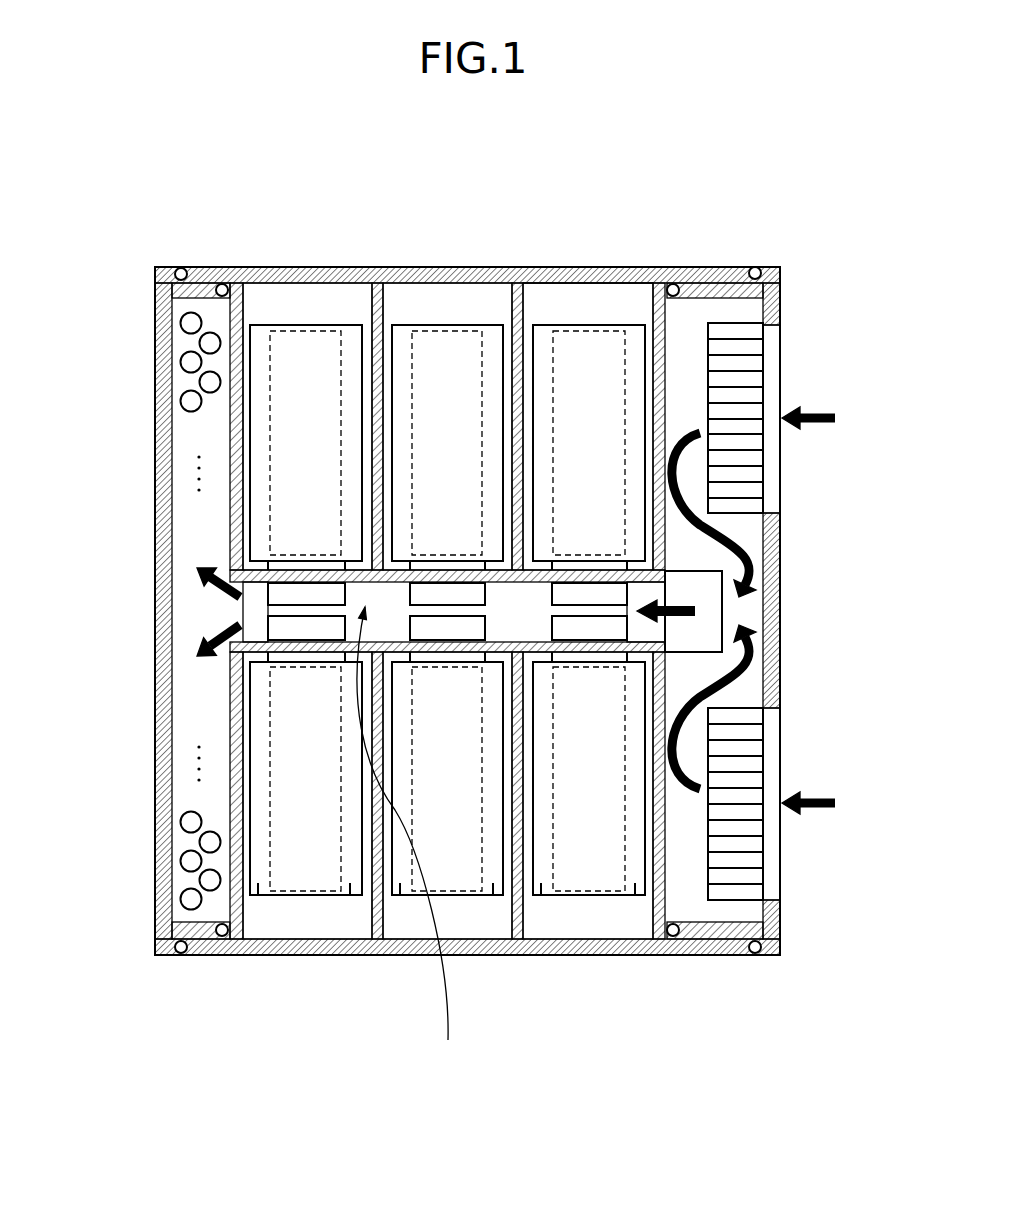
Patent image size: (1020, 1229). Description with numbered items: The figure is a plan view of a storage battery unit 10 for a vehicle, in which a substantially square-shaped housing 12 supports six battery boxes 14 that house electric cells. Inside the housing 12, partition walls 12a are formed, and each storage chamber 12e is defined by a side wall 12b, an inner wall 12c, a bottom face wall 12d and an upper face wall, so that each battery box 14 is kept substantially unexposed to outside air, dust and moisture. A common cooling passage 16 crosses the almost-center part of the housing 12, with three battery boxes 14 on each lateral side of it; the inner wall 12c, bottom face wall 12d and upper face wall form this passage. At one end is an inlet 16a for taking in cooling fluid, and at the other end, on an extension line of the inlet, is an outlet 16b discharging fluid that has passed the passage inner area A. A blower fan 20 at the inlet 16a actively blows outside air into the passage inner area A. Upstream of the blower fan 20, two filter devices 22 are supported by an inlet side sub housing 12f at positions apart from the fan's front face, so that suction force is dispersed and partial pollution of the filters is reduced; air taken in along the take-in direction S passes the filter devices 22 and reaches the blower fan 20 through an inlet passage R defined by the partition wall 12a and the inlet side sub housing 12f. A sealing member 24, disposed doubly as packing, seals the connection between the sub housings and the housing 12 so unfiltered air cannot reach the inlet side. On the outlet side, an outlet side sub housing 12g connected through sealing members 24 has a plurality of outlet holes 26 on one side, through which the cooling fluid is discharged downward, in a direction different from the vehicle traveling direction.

The storage battery unit 10 is at (752, 227).
The housing 12 is at (237, 268).
The partition walls 12a is at (241, 310).
The side wall 12b is at (328, 267).
The inner wall 12c is at (248, 565).
The bottom face wall 12d is at (595, 297).
The storage chamber 12e is at (290, 303).
The inlet side sub housing 12f is at (773, 290).
The outlet side sub housing 12g is at (155, 437).
The battery box 14 is at (350, 337).
The common cooling passage 16 is at (535, 603).
The inlet 16a is at (637, 637).
The outlet 16b is at (256, 640).
The blower fan 20 is at (713, 610).
The filter device 22 is at (747, 377).
The sealing member 24 is at (218, 267).
The outlet holes 26 is at (181, 400).
The passage inner area A is at (403, 835).
The outside air take-in direction S is at (838, 418).
The inlet passage R is at (687, 857).